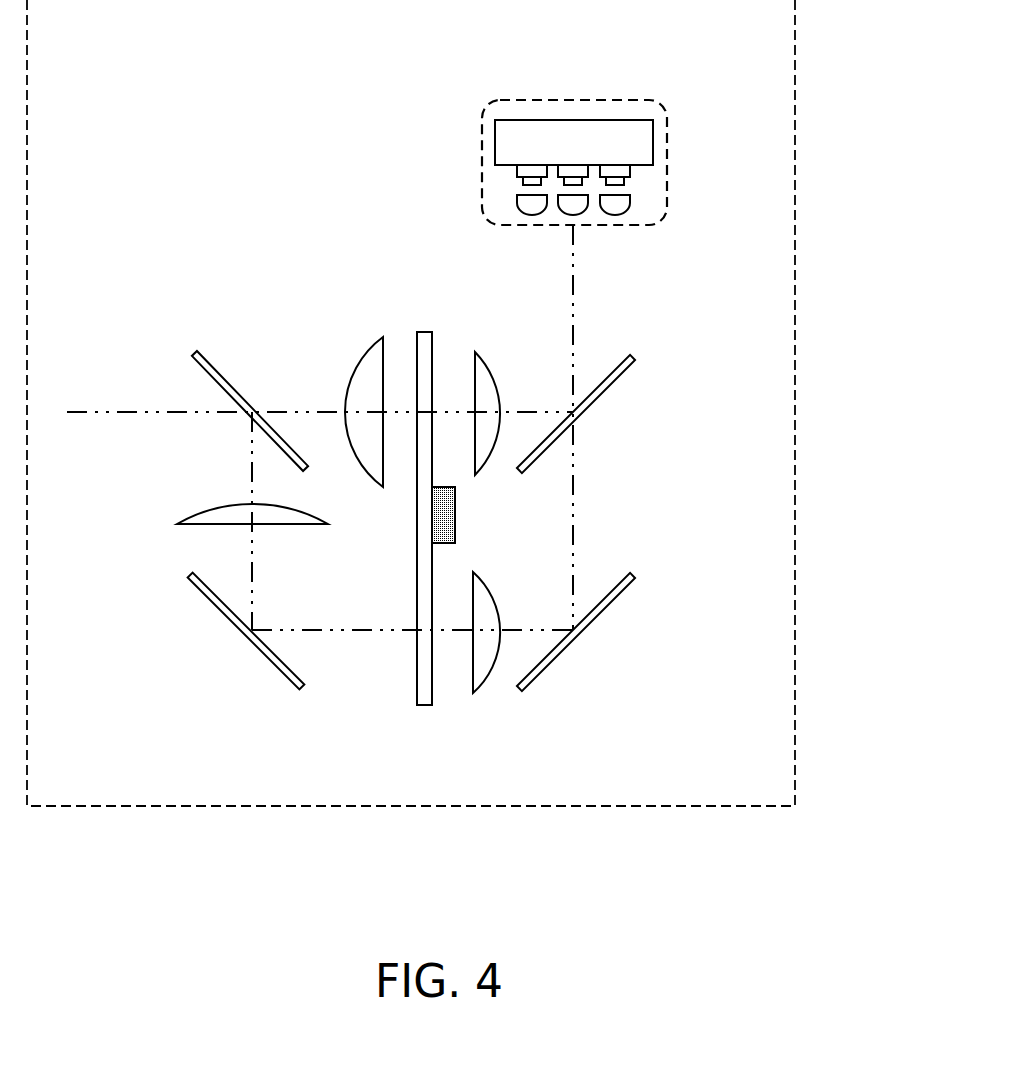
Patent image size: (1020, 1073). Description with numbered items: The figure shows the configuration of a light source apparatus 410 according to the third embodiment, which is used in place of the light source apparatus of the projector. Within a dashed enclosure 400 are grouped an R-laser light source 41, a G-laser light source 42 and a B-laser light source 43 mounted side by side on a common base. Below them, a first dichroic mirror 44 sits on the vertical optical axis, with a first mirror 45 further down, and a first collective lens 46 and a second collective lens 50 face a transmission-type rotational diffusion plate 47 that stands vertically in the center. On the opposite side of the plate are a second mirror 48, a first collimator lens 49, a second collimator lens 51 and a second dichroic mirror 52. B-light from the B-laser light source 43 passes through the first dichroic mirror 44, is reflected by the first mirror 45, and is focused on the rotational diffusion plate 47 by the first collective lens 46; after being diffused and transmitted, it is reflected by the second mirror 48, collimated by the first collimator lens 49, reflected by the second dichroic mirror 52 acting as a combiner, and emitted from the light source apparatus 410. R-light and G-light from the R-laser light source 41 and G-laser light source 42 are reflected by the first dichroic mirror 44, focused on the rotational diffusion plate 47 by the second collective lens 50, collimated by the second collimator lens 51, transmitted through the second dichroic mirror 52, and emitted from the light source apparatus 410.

The light source module 400 is at (640, 100).
The light source apparatus 410 is at (794, 97).
The R-laser light source 41 is at (528, 170).
The G-laser light source 42 is at (618, 175).
The B-laser light source 43 is at (577, 172).
The first dichroic mirror 44 is at (615, 380).
The first mirror 45 is at (615, 600).
The first collective lens 46 is at (483, 604).
The rotational diffusion plate 47 is at (425, 348).
The second mirror 48 is at (280, 673).
The first collimator lens 49 is at (198, 523).
The second collective lens 50 is at (477, 383).
The second collimator lens 51 is at (378, 372).
The second dichroic mirror 52 is at (188, 355).